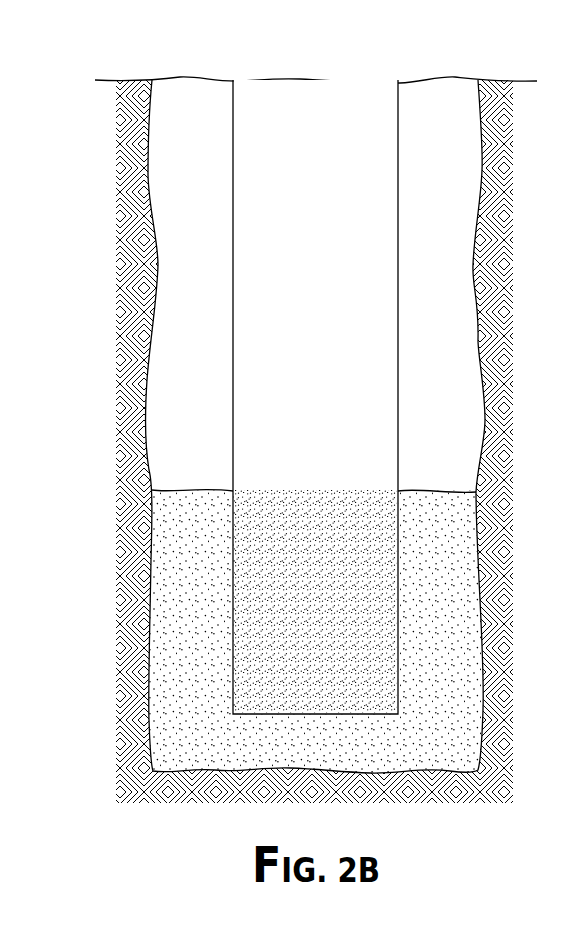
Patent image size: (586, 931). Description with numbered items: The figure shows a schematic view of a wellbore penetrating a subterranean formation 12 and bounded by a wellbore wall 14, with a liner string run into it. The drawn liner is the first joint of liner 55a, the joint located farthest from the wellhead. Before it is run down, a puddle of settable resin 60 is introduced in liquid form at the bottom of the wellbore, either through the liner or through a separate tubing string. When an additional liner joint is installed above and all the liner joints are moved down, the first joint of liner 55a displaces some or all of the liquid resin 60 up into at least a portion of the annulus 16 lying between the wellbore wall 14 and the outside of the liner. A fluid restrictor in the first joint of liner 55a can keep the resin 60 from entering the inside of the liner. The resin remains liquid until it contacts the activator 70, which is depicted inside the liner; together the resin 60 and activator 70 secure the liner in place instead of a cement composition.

The subterranean formation 12 is at (561, 302).
The wellbore wall 14 is at (146, 140).
The annulus 16 is at (452, 141).
The first joint of liner 55a is at (230, 100).
The resin 60 is at (452, 650).
The activator 70 is at (311, 462).